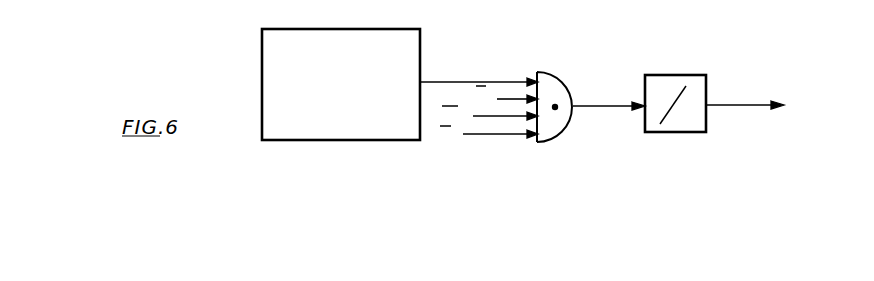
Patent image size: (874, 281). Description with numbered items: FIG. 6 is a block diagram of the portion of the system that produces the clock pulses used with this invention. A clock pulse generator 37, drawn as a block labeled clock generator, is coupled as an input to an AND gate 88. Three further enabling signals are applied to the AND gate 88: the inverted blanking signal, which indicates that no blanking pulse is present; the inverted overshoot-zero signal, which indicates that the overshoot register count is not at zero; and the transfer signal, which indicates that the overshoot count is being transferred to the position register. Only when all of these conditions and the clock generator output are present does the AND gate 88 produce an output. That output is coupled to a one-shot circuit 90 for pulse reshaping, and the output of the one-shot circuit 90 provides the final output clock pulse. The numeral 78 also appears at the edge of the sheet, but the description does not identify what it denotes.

The control circuit 78 is at (14, 0).
The clock pulse generator 37 is at (404, 29).
The AND gate 88 is at (553, 84).
The one-shot circuit 90 is at (690, 76).